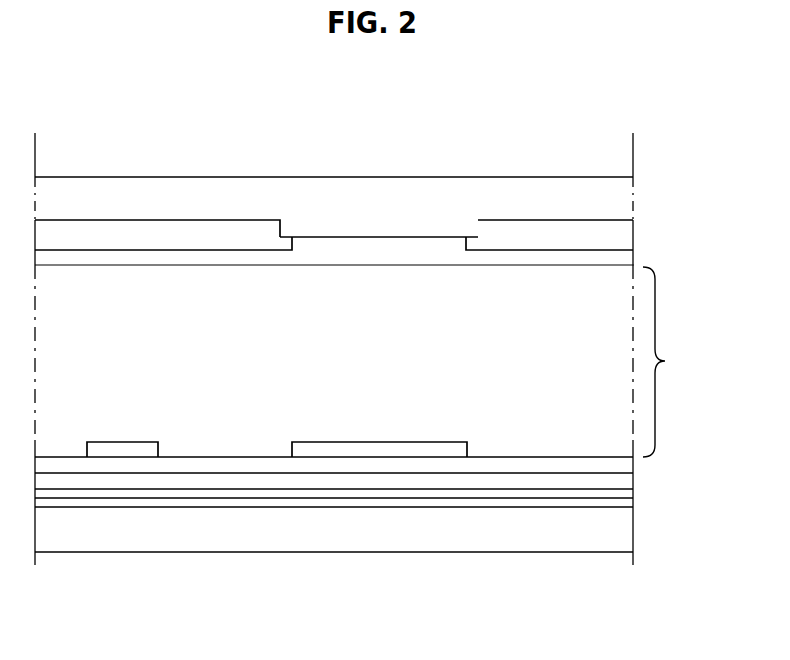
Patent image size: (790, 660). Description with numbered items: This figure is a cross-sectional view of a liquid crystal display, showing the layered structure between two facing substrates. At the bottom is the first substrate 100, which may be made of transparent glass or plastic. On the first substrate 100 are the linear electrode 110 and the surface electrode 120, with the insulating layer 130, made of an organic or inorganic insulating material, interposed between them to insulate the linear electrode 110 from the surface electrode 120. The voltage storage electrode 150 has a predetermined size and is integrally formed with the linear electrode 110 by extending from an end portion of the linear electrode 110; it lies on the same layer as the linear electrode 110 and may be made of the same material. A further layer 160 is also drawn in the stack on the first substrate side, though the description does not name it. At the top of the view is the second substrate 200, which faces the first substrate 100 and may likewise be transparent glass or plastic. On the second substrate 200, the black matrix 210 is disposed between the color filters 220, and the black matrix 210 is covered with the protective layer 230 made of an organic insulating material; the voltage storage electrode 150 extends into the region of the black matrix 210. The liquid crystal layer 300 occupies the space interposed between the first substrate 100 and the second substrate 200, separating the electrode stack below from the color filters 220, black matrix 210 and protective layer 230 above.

The first substrate 100 is at (277, 530).
The linear electrode 110 is at (117, 448).
The surface electrode 120 is at (559, 482).
The insulating layer 130 is at (190, 463).
The voltage storage electrode 150 is at (367, 449).
The intermediate layer 160 is at (471, 496).
The second substrate 200 is at (222, 192).
The black matrix 210 is at (437, 230).
The color filters 220 is at (117, 237).
The protective layer 230 is at (345, 253).
The liquid crystal layer 300 is at (675, 361).